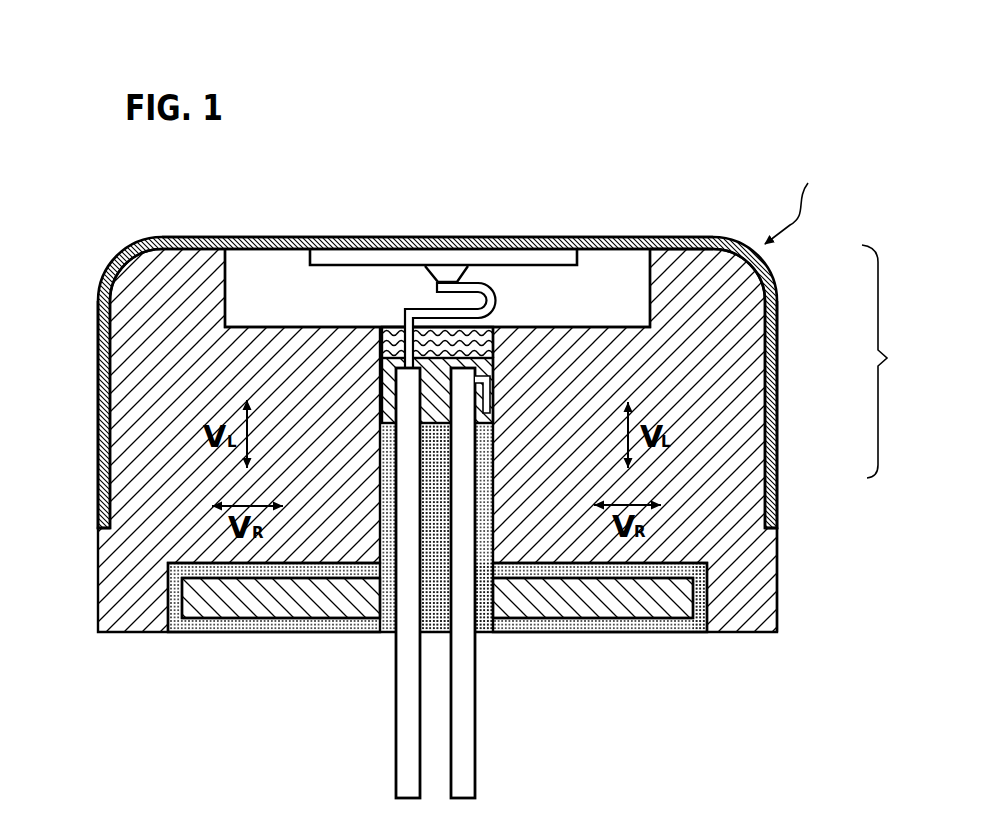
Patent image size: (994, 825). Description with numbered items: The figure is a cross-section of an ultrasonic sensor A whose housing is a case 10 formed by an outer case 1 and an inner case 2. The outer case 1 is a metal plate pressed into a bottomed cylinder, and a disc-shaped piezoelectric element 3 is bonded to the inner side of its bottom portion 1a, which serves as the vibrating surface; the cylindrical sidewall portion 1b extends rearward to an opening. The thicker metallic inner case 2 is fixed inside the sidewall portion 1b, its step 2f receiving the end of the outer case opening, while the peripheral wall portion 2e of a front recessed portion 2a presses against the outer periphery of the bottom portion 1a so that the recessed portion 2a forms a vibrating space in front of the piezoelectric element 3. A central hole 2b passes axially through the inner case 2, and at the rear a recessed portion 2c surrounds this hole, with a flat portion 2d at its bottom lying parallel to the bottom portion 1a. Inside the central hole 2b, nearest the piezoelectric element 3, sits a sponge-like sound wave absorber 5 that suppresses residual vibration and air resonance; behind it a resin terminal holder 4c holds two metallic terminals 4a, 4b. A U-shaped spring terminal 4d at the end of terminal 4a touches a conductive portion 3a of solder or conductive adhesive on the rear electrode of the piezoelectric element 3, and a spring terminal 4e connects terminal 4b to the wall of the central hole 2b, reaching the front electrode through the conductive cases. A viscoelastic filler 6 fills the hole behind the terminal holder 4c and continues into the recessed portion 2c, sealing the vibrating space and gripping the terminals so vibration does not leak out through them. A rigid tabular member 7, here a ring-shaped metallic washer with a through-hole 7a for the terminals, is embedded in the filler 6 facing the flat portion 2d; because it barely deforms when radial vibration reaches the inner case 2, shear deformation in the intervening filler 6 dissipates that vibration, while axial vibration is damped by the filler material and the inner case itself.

The outer case 1 is at (768, 283).
The bottom portion 1a is at (472, 240).
The sidewall portion 1b is at (98, 450).
The inner case 2 is at (748, 455).
The recessed portion 2a is at (645, 280).
The central hole 2b is at (493, 463).
The recessed portion 2c is at (700, 617).
The flat portion 2d is at (561, 567).
The peripheral wall portion 2e is at (695, 290).
The step 2f is at (777, 520).
The piezoelectric element 3 is at (551, 262).
The conductive portion 3a is at (442, 270).
The metallic terminal 4a is at (398, 763).
The metallic terminal 4b is at (468, 768).
The terminal holder 4c is at (382, 372).
The spring terminal 4d is at (496, 298).
The spring terminal 4e is at (493, 388).
The sound wave absorber 5 is at (383, 330).
The filler 6 is at (430, 610).
The tabular member 7 is at (265, 600).
The through-hole 7a is at (484, 614).
The case 10 is at (895, 361).
The ultrasonic sensor A is at (798, 197).